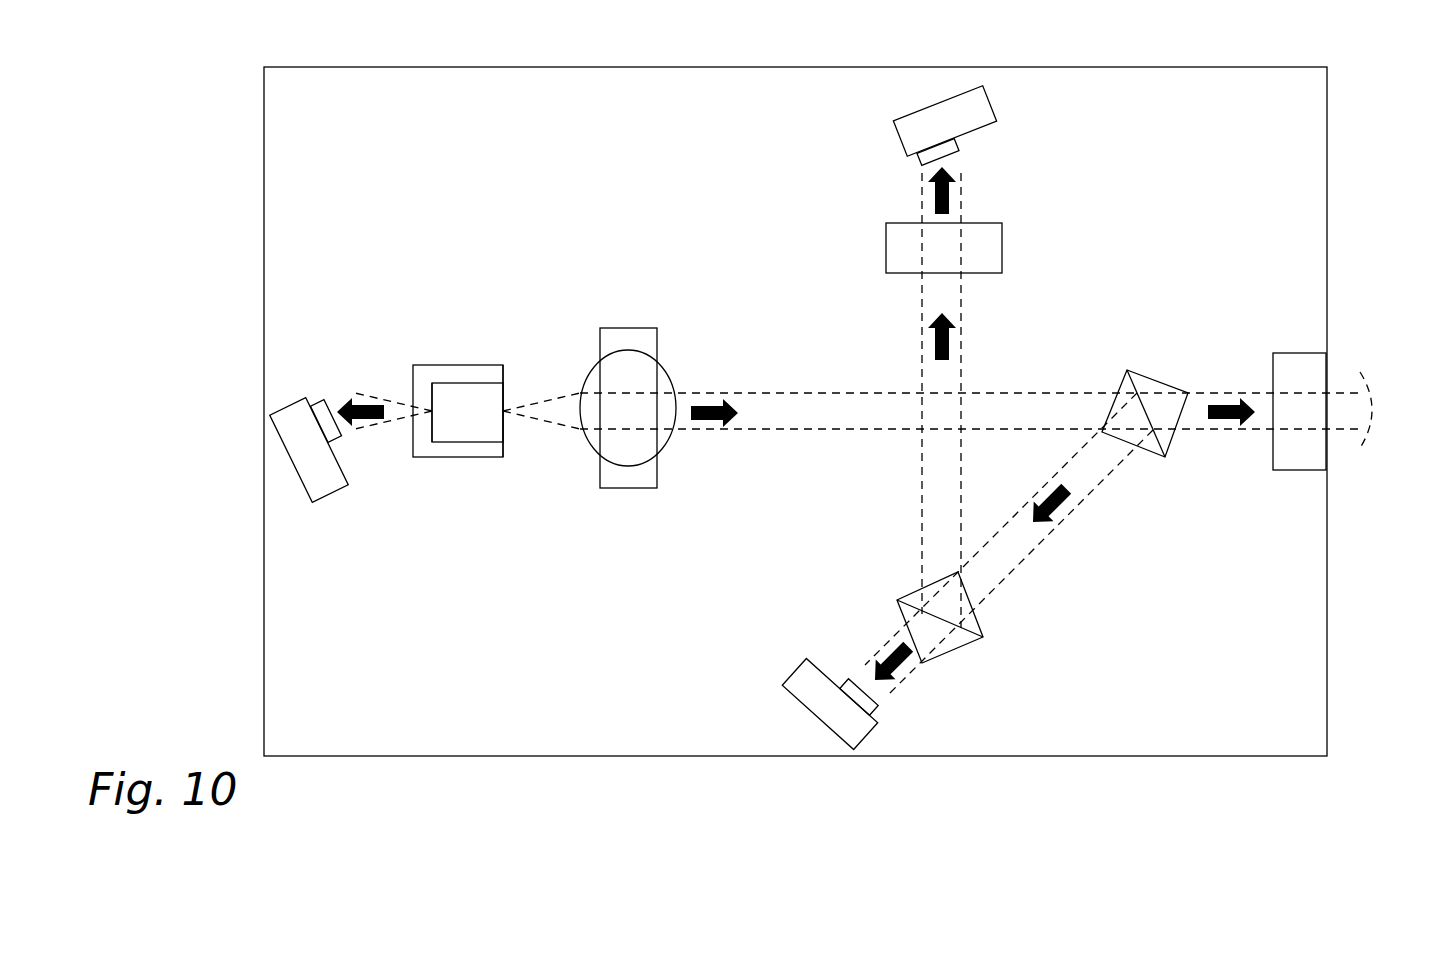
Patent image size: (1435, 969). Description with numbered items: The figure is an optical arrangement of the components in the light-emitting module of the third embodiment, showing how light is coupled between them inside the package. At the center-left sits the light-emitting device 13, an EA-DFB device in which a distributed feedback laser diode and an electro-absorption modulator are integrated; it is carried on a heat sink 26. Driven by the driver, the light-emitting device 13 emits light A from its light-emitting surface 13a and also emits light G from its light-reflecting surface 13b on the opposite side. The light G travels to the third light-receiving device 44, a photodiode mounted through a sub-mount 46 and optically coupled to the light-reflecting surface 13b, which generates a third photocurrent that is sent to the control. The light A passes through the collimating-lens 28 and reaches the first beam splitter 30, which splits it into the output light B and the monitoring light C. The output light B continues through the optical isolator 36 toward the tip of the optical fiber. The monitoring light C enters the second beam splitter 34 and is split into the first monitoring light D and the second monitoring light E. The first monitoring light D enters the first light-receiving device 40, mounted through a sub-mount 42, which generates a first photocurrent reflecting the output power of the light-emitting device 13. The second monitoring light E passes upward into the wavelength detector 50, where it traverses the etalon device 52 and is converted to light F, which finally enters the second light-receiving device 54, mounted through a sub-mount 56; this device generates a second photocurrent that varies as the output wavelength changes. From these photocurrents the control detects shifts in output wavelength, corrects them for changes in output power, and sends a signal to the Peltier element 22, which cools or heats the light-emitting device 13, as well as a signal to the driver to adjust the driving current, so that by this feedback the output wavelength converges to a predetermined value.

The light-emitting device 13 is at (450, 383).
The light-emitting surface 13a is at (503, 432).
The light-reflecting surface 13b is at (431, 396).
The Peltier element 22 is at (1327, 210).
The heat sink 26 is at (433, 457).
The collimating-lens 28 is at (622, 328).
The first beam splitter 30 is at (1140, 370).
The second beam splitter 34 is at (897, 599).
The optical isolator 36 is at (1302, 352).
The first light-receiving device 40 is at (845, 680).
The sub-mount 42 is at (815, 712).
The third light-receiving device 44 is at (315, 400).
The sub-mount 46 is at (321, 502).
The wavelength detector 50 is at (867, 206).
The etalon device 52 is at (886, 245).
The second light-receiving device 54 is at (917, 160).
The sub-mount 56 is at (893, 121).
The light A is at (700, 408).
The output light B is at (1222, 405).
The monitoring light C is at (1060, 510).
The first monitoring light D is at (900, 665).
The second monitoring light E is at (947, 345).
The light F is at (947, 192).
The light G is at (358, 420).